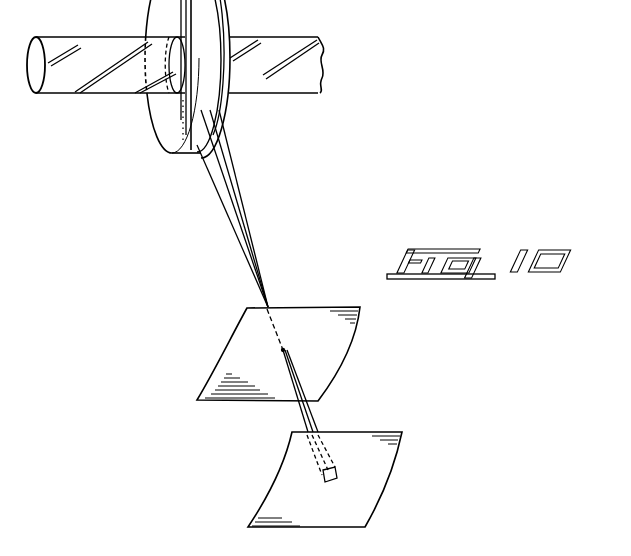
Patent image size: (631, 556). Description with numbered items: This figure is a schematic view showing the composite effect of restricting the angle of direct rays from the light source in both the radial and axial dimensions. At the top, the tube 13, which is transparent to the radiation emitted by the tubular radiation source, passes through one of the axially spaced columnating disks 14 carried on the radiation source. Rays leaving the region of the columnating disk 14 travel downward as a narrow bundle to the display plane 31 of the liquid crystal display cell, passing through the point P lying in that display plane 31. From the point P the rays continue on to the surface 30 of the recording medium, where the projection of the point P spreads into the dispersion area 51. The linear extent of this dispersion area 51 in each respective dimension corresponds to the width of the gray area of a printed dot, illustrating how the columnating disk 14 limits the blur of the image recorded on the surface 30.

The tube 13 is at (72, 73).
The columnating disk 14 is at (162, 110).
The display plane 31 is at (338, 348).
The point P is at (283, 350).
The surface of the recording medium 30 is at (387, 455).
The dispersion area 51 is at (330, 482).